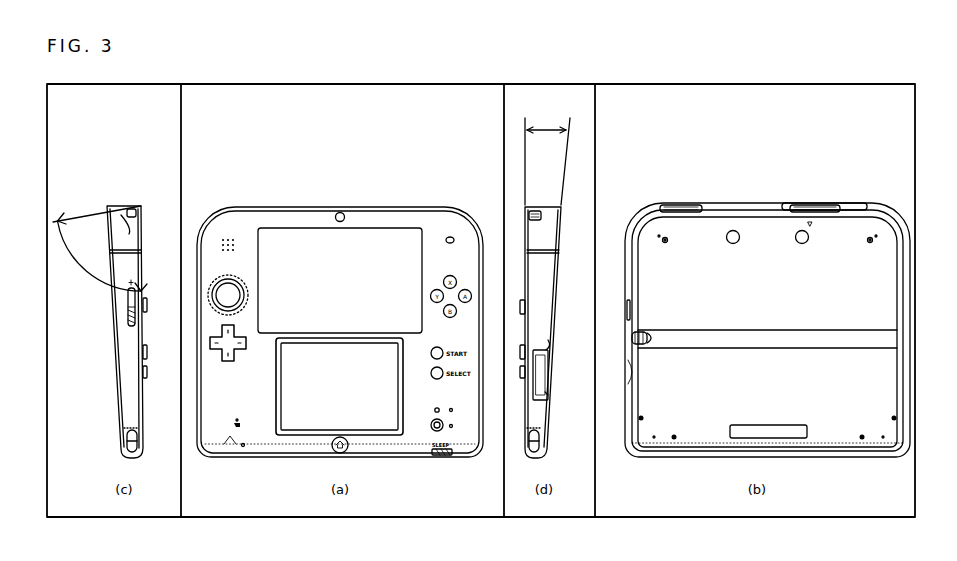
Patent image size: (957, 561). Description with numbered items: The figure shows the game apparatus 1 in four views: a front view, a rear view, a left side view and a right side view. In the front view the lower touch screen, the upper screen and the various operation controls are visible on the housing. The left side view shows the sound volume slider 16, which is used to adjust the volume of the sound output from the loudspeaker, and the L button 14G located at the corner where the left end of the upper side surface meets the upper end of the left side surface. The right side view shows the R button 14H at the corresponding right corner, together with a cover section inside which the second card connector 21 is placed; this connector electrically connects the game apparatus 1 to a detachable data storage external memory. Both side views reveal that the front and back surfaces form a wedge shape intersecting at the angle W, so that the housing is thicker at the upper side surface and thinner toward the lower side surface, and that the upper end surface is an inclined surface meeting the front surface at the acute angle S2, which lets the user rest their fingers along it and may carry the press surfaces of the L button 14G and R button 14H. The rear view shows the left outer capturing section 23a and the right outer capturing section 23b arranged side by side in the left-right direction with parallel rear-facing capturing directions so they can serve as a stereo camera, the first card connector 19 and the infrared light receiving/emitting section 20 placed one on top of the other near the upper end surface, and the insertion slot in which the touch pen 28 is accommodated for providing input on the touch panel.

The game apparatus 1 is at (454, 172).
The L button 14G is at (128, 232).
The R button 14H is at (548, 216).
The sound volume slider 16 is at (128, 316).
The first card connector 19 is at (842, 207).
The infrared light receiving/emitting section 20 is at (810, 205).
The second card connector 21 is at (545, 392).
The left outer capturing section 23a is at (800, 230).
The right outer capturing section 23b is at (733, 230).
The touch pen 28 is at (548, 342).
The angle S2 is at (100, 248).
The angle W is at (547, 155).